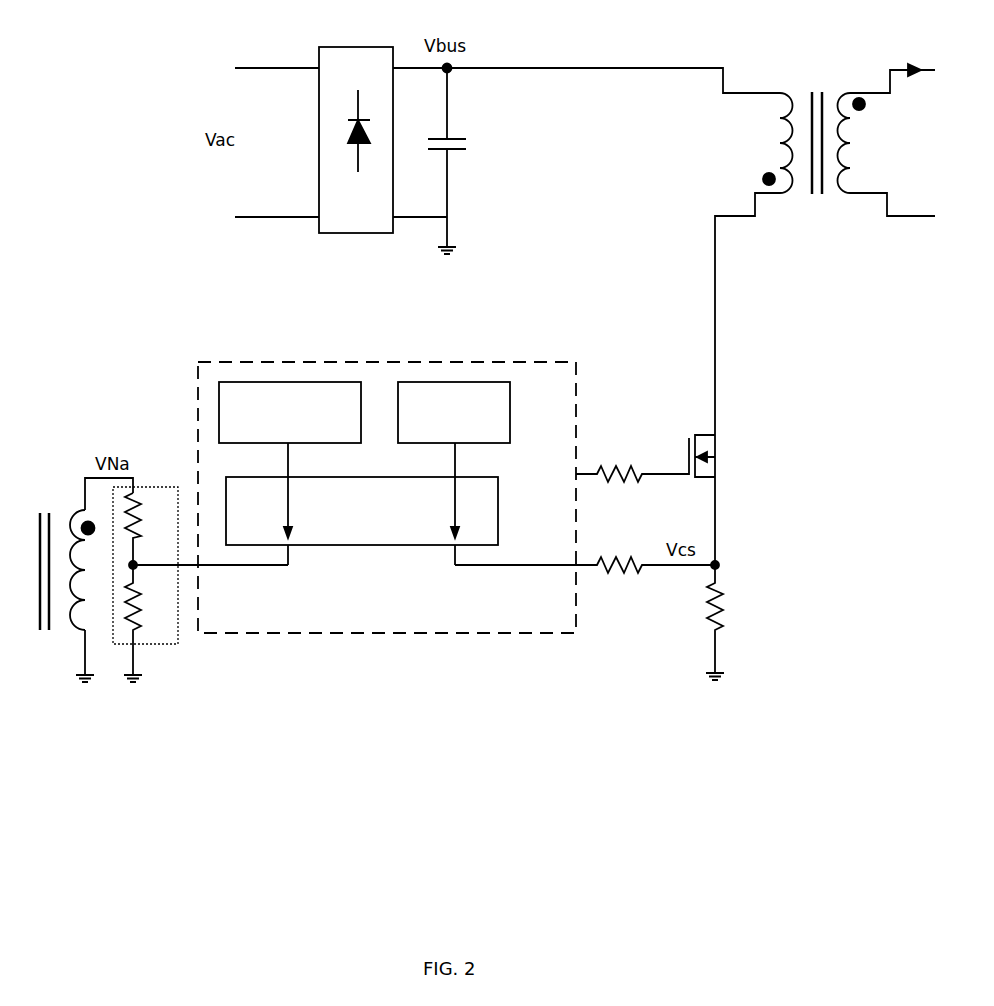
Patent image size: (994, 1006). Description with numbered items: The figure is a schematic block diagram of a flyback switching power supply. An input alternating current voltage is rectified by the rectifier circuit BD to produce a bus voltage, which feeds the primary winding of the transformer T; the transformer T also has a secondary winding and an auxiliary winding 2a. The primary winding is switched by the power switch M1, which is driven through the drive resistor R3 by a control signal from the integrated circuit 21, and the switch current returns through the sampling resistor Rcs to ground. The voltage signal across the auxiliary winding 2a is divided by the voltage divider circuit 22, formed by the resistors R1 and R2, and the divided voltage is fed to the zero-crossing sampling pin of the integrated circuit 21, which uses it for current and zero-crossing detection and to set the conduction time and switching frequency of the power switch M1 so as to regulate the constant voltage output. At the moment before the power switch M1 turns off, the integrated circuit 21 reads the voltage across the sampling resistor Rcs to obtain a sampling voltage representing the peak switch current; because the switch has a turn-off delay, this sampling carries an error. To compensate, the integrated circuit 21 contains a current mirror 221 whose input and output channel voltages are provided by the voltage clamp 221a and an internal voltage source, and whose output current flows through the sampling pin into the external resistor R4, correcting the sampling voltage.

The auxiliary winding 2a is at (62, 485).
The integrated circuit 21 is at (387, 487).
The voltage divider circuit 22 is at (159, 592).
The current mirror 221 is at (370, 545).
The voltage clamp 221a is at (290, 412).
The rectifier circuit BD is at (363, 47).
The transformer T is at (808, 130).
The power switch M1 is at (683, 456).
The resistor R1 is at (145, 529).
The resistor R2 is at (159, 644).
The drive resistor R3 is at (632, 492).
The external resistor R4 is at (585, 584).
The sampling resistor Rcs is at (732, 619).